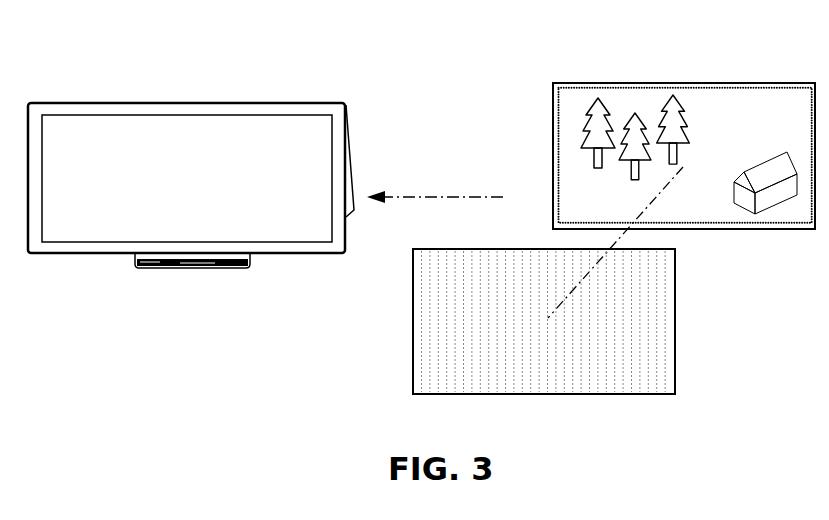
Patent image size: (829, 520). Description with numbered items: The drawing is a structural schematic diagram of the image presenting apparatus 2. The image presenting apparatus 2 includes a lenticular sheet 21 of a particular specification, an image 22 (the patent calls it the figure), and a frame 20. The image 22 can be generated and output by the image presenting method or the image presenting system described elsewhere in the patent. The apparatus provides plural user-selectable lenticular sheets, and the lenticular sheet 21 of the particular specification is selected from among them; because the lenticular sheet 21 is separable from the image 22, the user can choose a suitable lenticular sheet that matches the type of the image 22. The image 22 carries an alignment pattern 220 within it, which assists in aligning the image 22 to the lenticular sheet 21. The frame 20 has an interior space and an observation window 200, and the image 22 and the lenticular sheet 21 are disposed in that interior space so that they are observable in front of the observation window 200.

The image presenting apparatus 2 is at (448, 66).
The frame 20 is at (310, 110).
The observation window 200 is at (168, 132).
The lenticular sheet 21 is at (422, 337).
The figure 22 is at (553, 83).
The alignment pattern 220 is at (710, 90).